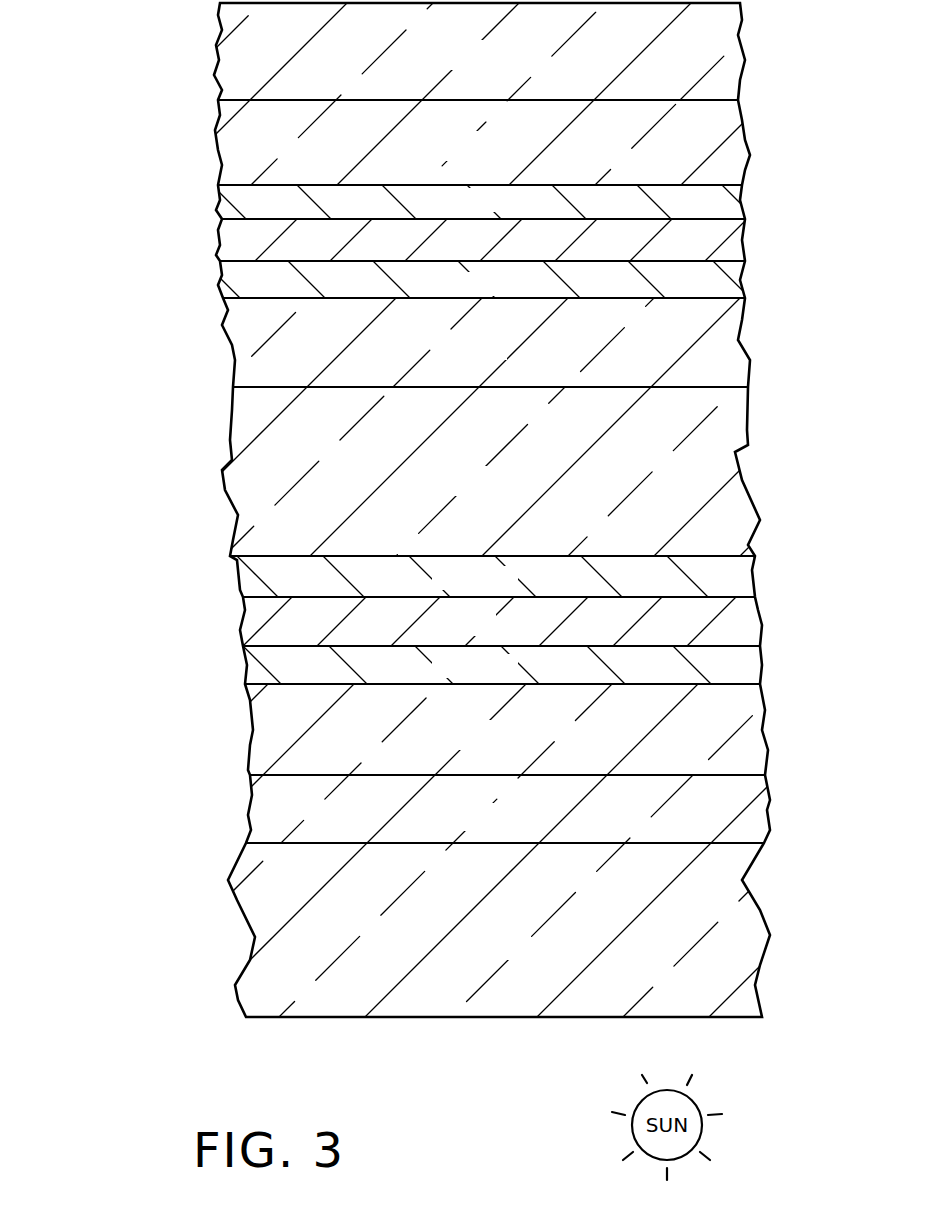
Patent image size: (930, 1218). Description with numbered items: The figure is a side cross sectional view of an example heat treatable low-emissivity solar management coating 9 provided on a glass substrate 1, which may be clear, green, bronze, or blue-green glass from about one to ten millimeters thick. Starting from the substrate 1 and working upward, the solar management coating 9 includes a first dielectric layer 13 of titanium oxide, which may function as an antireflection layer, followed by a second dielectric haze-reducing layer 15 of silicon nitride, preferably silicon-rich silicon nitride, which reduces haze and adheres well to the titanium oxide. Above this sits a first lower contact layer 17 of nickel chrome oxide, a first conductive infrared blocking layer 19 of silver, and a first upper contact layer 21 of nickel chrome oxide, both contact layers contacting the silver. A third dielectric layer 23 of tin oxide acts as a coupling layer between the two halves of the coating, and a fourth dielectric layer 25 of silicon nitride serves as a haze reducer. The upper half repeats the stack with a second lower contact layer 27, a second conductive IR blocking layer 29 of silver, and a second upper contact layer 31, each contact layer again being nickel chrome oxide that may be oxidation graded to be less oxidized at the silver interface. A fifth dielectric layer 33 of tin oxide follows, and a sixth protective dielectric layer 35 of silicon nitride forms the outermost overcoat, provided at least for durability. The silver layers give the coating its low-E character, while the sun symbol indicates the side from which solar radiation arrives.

The substrate 1 is at (727, 940).
The solar management coating 9 is at (190, 840).
The first dielectric layer 13 is at (733, 817).
The second dielectric haze-reducing layer 15 is at (723, 737).
The first lower contact layer 17 is at (742, 663).
The first conductive infrared blocking layer 19 is at (733, 623).
The first upper contact layer 21 is at (732, 577).
The third dielectric layer 23 is at (700, 480).
The fourth dielectric layer 25 is at (727, 352).
The second lower contact layer 27 is at (697, 283).
The second conductive IR blocking layer 29 is at (697, 243).
The second upper contact layer 31 is at (722, 202).
The fifth dielectric layer 33 is at (710, 130).
The sixth protective dielectric layer 35 is at (697, 52).